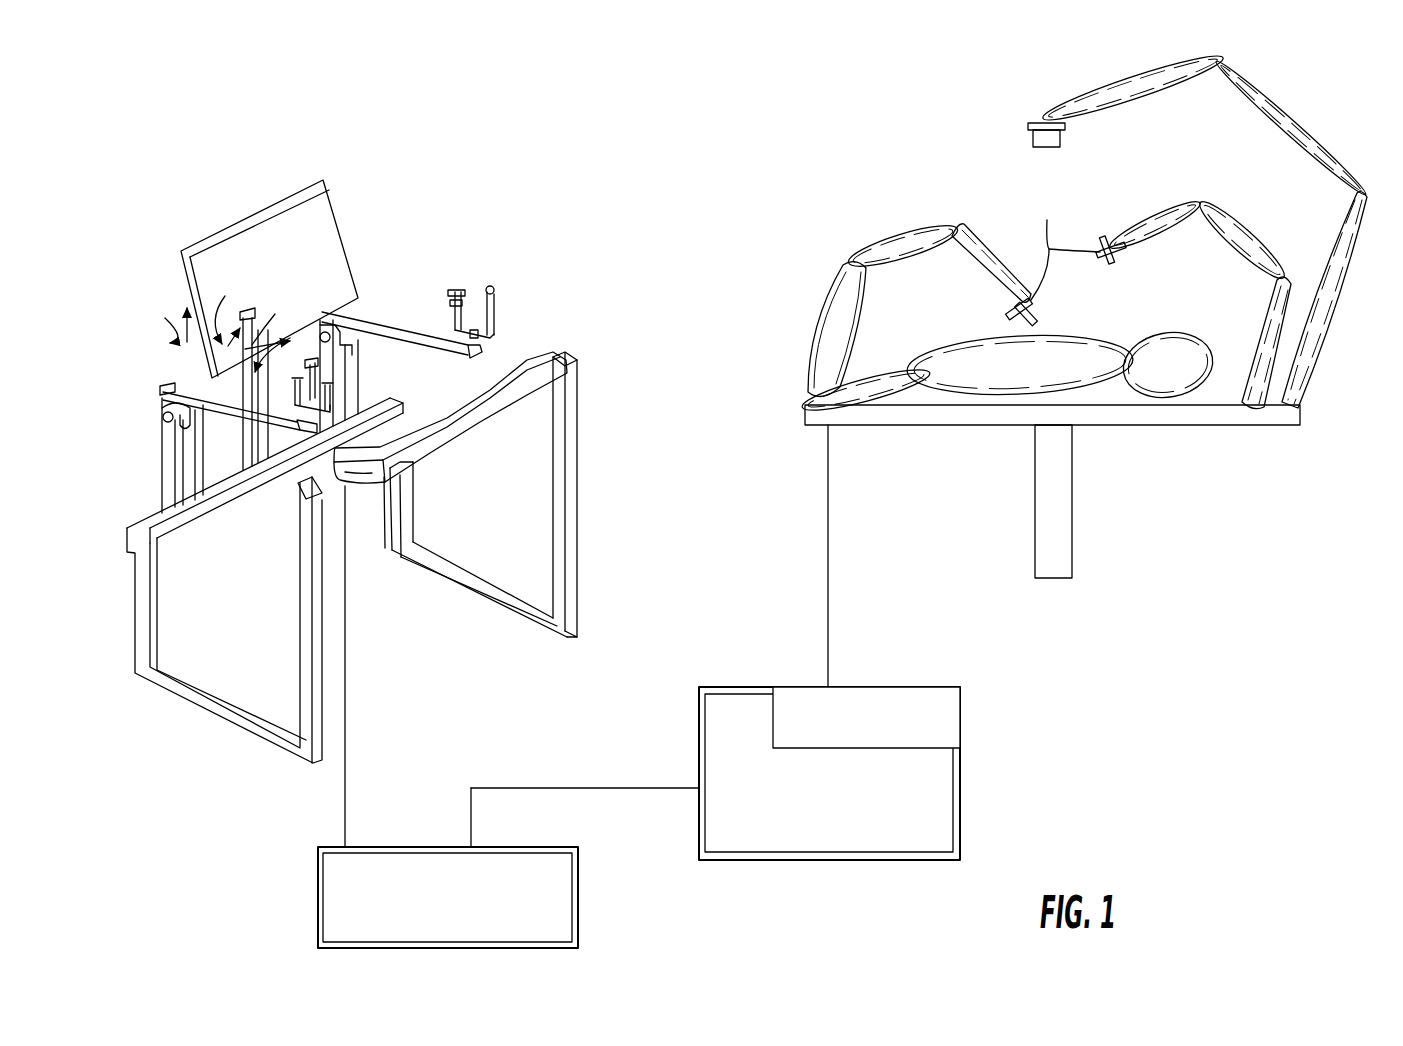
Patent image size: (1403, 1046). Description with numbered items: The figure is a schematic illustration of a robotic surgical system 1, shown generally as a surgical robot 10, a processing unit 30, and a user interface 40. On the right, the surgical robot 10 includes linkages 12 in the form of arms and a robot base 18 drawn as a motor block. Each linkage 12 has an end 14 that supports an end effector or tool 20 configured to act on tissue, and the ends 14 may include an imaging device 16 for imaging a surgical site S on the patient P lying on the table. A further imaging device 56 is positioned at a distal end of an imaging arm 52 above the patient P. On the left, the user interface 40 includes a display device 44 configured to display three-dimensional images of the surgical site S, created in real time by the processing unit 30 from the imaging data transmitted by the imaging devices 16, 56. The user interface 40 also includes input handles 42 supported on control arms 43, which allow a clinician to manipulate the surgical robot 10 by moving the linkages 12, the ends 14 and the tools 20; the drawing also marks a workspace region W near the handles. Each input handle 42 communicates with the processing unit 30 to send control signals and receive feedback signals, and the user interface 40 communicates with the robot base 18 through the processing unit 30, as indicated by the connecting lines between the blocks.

The robotic surgical system 1 is at (551, 129).
The surgical robot 10 is at (912, 107).
The linkages 12 is at (858, 205).
The end 14 is at (1004, 311).
The imaging device 16 is at (1012, 298).
The robot base 18 is at (814, 798).
The end effector or tool 20 is at (1065, 245).
The processing unit 30 is at (431, 908).
The user interface 40 is at (191, 170).
The input handles 42 is at (498, 300).
The control arms 43 is at (456, 300).
The display device 44 is at (338, 205).
The imaging arm 52 is at (1317, 126).
The imaging device 56 is at (1030, 136).
The workspace W is at (492, 255).
The surgical site S is at (1073, 330).
The patient P is at (1135, 450).